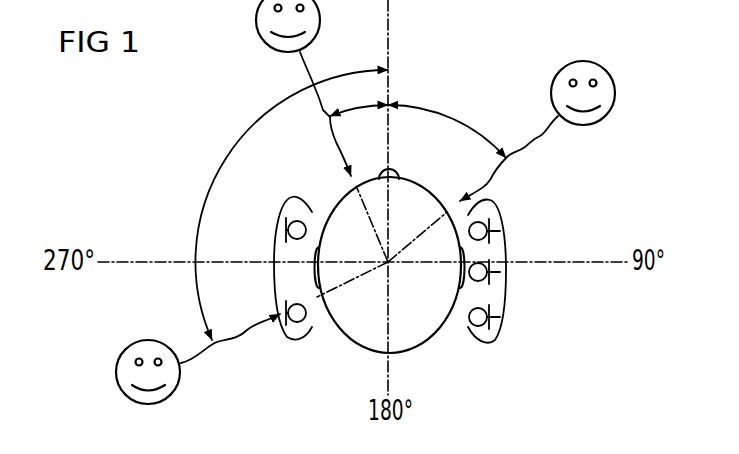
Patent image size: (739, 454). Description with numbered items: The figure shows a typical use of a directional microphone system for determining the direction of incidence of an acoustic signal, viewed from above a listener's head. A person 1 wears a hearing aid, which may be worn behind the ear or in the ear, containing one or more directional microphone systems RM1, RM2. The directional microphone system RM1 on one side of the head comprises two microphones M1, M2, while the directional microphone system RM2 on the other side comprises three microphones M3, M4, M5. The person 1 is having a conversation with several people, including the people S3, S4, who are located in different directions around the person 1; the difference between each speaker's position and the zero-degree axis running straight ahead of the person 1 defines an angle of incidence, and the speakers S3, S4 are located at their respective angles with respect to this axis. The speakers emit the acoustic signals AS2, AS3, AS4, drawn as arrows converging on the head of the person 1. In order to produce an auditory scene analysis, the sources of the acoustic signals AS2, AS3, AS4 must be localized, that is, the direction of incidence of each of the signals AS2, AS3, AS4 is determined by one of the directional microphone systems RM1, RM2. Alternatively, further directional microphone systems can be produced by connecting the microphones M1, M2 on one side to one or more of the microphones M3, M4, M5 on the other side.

The person 1 is at (415, 324).
The microphone M1 is at (286, 230).
The microphone M2 is at (286, 305).
The microphone M3 is at (500, 231).
The microphone M4 is at (500, 272).
The microphone M5 is at (500, 317).
The directional microphone system RM1 is at (300, 341).
The directional microphone system RM2 is at (485, 344).
The acoustic signal AS2 is at (306, 73).
The acoustic signal AS3 is at (533, 143).
The acoustic signal AS4 is at (232, 342).
The person S3 is at (615, 93).
The person S4 is at (117, 379).